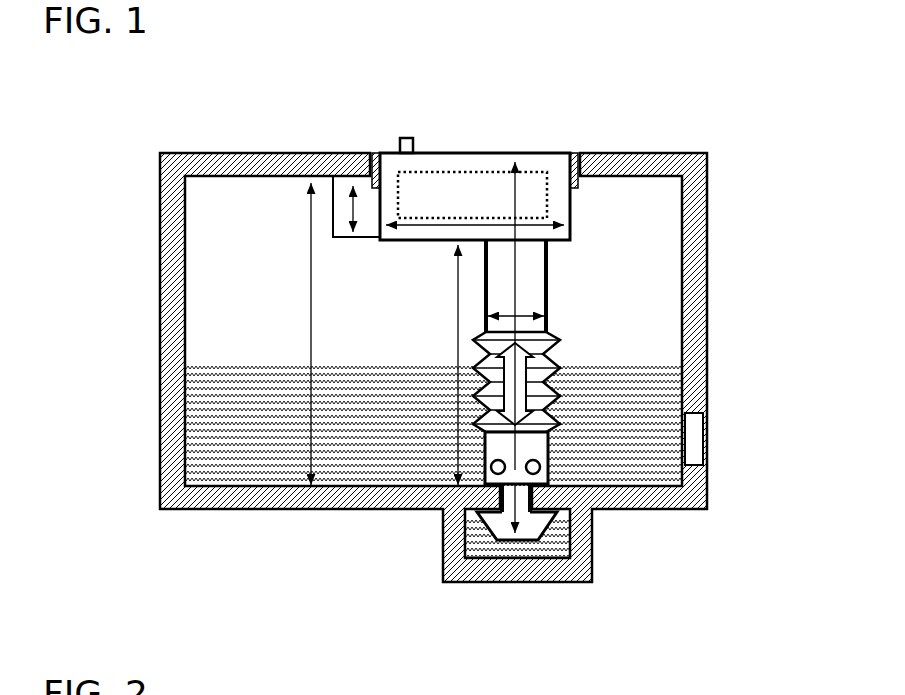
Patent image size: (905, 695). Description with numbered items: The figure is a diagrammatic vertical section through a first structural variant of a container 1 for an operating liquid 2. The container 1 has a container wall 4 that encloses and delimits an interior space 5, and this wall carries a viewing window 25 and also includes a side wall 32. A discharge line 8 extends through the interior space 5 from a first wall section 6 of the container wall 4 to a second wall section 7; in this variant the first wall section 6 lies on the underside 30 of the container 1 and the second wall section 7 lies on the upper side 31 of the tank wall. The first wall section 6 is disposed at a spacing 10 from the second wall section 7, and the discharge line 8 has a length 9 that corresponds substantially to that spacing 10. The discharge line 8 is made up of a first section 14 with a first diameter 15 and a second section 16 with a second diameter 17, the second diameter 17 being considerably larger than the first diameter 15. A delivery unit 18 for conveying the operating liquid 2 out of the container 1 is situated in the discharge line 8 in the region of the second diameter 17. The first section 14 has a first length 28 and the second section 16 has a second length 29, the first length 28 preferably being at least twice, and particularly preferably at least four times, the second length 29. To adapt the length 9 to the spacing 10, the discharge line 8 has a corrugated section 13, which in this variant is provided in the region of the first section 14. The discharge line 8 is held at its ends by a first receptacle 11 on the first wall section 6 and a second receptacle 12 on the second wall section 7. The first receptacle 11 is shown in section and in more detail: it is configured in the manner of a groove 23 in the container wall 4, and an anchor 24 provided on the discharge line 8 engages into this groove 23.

The container 1 is at (427, 328).
The operating liquid 2 is at (232, 380).
The container wall 4 is at (384, 367).
The interior space 5 is at (652, 242).
The first wall section 6 is at (513, 576).
The second wall section 7 is at (444, 169).
The discharge line 8 is at (547, 296).
The length 9 is at (518, 275).
The spacing 10 is at (311, 298).
The first receptacle 11 is at (591, 512).
The second receptacle 12 is at (580, 178).
The corrugated section 13 is at (480, 343).
The first section 14 is at (455, 483).
The first diameter 15 is at (542, 317).
The second section 16 is at (335, 207).
The second diameter 17 is at (418, 240).
The delivery unit 18 is at (540, 170).
The groove 23 is at (470, 522).
The anchor 24 is at (538, 528).
The viewing window 25 is at (695, 432).
The first length 28 is at (475, 422).
The second length 29 is at (323, 149).
The underside 30 is at (212, 512).
The upper side 31 is at (273, 153).
The side wall 32 is at (160, 377).